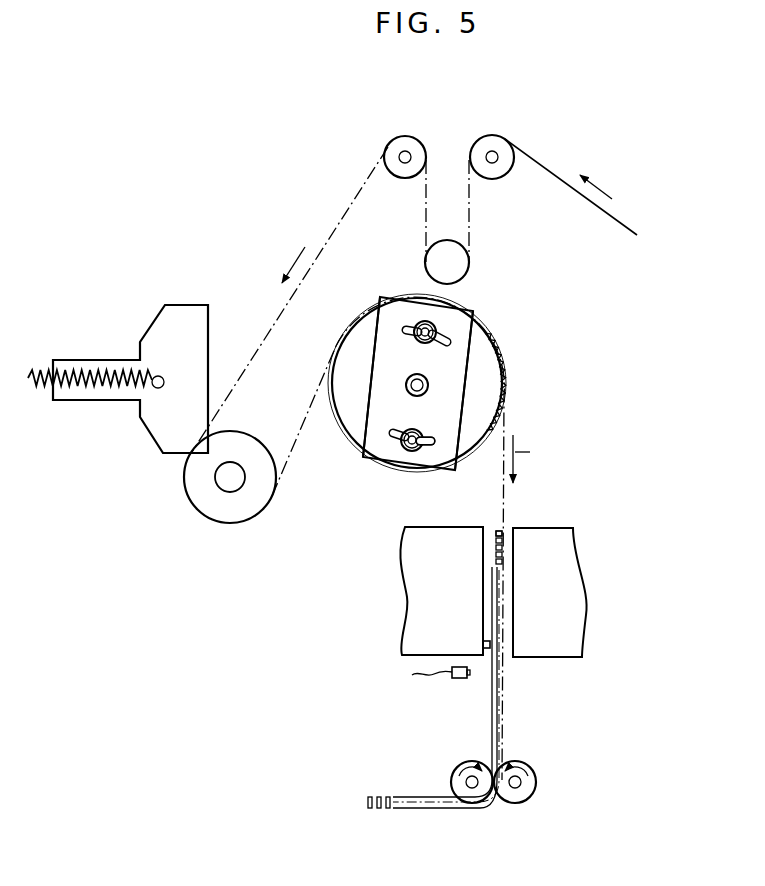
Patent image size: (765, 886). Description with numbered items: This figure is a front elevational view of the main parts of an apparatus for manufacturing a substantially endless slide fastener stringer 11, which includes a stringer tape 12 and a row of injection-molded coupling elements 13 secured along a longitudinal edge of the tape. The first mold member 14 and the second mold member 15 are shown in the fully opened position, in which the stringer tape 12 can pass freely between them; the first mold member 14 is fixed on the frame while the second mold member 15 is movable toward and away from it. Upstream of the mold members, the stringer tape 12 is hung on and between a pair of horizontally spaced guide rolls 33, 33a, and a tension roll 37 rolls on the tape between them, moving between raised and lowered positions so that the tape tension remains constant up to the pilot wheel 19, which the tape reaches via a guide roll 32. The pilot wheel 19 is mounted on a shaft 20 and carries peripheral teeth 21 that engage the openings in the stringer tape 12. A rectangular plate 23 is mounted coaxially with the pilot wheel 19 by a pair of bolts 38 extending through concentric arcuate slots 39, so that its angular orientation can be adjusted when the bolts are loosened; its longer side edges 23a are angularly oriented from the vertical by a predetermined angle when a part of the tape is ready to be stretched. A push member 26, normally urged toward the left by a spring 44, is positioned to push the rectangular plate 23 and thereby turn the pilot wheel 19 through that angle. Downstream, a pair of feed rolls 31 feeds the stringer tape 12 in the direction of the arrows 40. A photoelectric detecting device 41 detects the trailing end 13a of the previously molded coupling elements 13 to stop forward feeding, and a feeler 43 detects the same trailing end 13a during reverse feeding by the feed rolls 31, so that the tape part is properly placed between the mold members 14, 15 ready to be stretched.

The slide fastener stringer 11 is at (375, 811).
The stringer tape 12 is at (548, 168).
The injection-molded coupling elements 13 is at (503, 540).
The trailing end coupling element 13a is at (506, 528).
The first mold member 14 is at (413, 645).
The second mold member 15 is at (572, 648).
The pilot wheel 19 is at (482, 378).
The shaft 20 is at (410, 384).
The peripheral teeth 21 is at (497, 345).
The rectangular plate 23 is at (377, 448).
The longer side edges 23a is at (463, 413).
The push member 26 is at (185, 318).
The feed rolls 31 is at (455, 774).
The guide roll 32 is at (221, 491).
The guide roll 33 is at (398, 140).
The guide roll 33a is at (493, 140).
The tension roll 37 is at (458, 268).
The bolts 38 is at (423, 327).
The arcuate slots 39 is at (428, 447).
The arrows 40 is at (378, 463).
The photoelectric detecting device 41 is at (450, 677).
The feeler 43 is at (486, 650).
The spring 44 is at (98, 365).